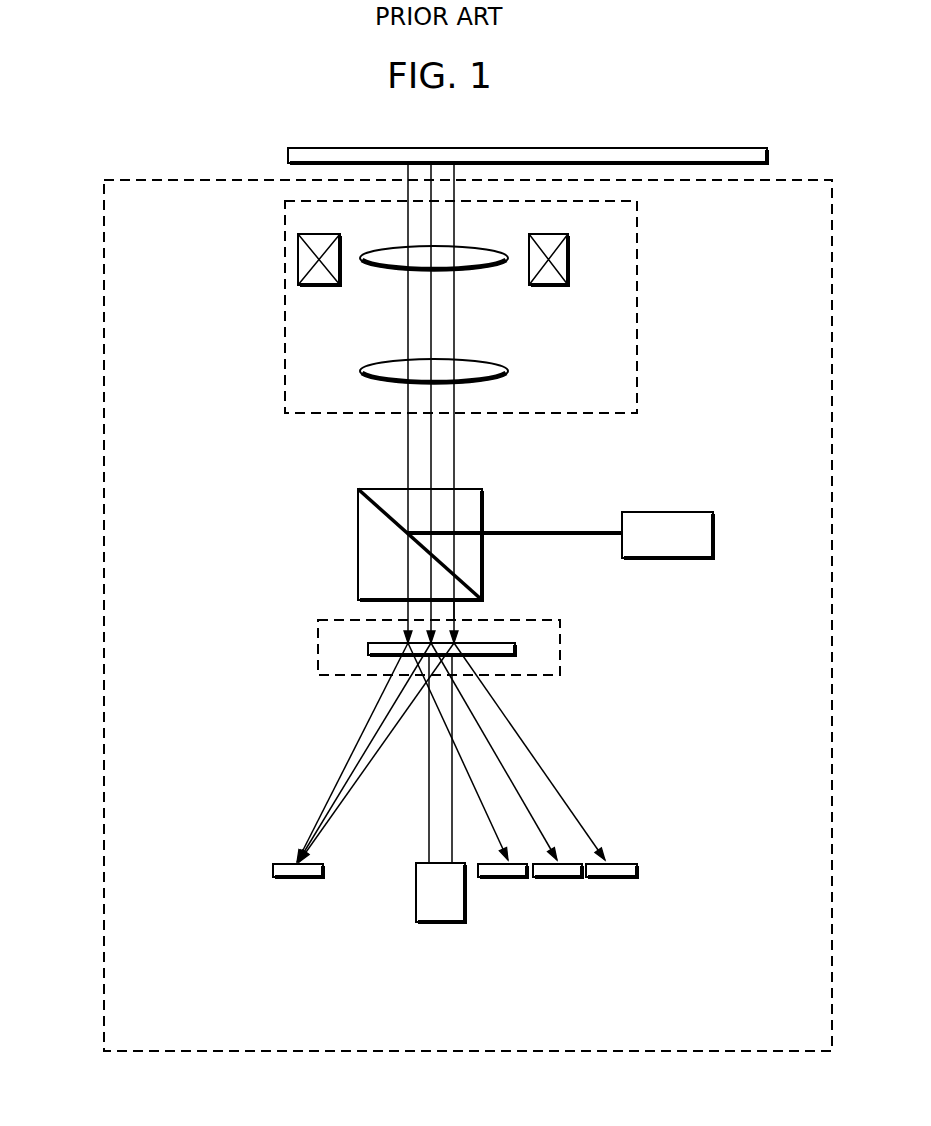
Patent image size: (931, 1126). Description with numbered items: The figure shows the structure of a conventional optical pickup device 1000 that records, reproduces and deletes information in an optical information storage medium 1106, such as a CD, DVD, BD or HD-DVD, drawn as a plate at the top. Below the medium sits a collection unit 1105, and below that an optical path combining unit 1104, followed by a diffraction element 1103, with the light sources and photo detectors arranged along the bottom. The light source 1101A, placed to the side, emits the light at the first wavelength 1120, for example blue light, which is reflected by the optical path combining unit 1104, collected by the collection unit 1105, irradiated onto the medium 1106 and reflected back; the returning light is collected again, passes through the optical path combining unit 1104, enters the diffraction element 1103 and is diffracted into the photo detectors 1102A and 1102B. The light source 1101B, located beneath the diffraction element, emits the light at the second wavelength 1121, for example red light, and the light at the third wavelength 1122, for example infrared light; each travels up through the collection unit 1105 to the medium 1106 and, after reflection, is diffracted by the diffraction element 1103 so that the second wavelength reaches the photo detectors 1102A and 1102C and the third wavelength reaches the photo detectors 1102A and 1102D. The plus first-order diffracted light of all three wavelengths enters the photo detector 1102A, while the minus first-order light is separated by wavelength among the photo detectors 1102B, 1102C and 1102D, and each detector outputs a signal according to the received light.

The optical pickup device 1000 is at (101, 477).
The optical information storage medium 1106 is at (288, 157).
The collection unit 1105 is at (302, 345).
The optical path combining unit 1104 is at (388, 515).
The light at the second wavelength 1121 is at (430, 575).
The light at the first wavelength 1120 is at (517, 532).
The light source 1101A is at (665, 527).
The light at the third wavelength 1122 is at (455, 612).
The diffraction element 1103 is at (330, 632).
The photo detector 1102A is at (300, 879).
The photo detector 1102B is at (497, 878).
The photo detector 1102C is at (548, 878).
The photo detector 1102D is at (607, 878).
The light source 1101B is at (443, 922).